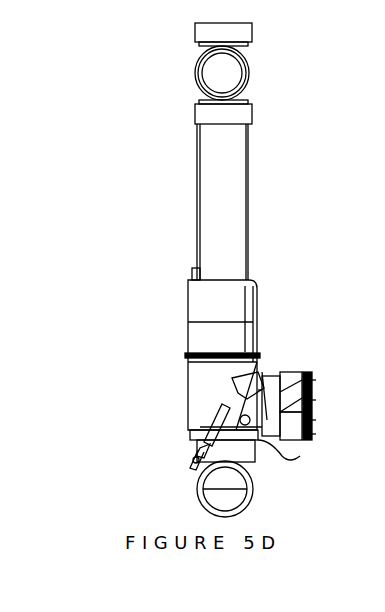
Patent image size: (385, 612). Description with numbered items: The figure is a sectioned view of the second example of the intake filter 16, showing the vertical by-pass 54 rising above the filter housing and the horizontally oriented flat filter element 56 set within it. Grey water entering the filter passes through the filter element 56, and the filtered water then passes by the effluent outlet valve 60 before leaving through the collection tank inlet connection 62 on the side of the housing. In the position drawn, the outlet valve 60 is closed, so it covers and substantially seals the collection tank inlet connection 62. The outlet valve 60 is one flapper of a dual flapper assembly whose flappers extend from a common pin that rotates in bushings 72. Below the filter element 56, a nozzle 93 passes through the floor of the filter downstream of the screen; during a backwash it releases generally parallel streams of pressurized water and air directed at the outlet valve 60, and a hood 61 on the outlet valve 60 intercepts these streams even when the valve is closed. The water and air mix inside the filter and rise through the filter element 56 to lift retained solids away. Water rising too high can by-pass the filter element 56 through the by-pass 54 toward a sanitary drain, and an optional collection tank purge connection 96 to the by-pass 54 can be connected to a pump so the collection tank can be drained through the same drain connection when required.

The by-pass 54 is at (246, 191).
The intake filter 16 is at (372, 226).
The filter element 56 is at (157, 392).
The effluent outlet valve 60 is at (232, 383).
The hood 61 is at (148, 317).
The collection tank inlet connection 62 is at (284, 372).
The bushings 72 is at (266, 441).
The nozzle 93 is at (212, 412).
The collection tank purge connection 96 is at (314, 437).